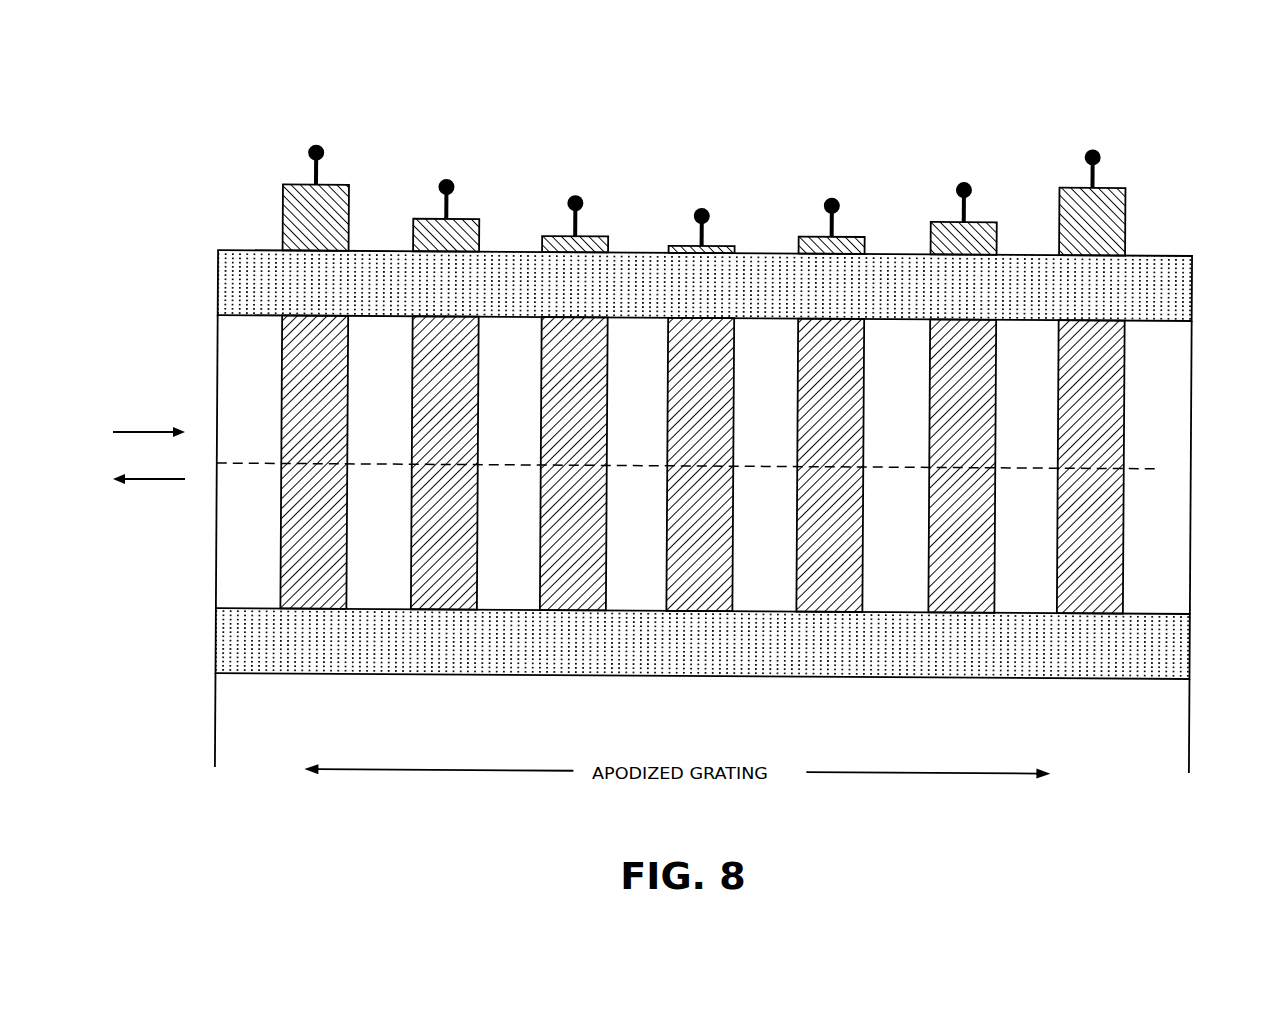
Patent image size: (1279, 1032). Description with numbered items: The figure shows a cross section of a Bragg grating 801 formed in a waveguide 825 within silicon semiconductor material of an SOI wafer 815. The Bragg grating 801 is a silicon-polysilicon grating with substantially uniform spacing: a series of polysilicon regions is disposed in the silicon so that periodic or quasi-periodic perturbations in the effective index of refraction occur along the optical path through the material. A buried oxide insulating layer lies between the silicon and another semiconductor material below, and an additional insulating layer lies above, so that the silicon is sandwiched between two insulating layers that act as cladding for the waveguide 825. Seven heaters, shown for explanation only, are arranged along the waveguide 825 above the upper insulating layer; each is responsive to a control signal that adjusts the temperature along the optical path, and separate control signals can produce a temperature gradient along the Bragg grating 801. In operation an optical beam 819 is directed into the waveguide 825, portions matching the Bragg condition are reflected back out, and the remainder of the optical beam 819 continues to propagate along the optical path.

The Bragg grating 801 is at (1171, 66).
The SOI wafer 815 is at (1188, 238).
The optical beam 819 is at (143, 429).
The waveguide 825 is at (1200, 361).